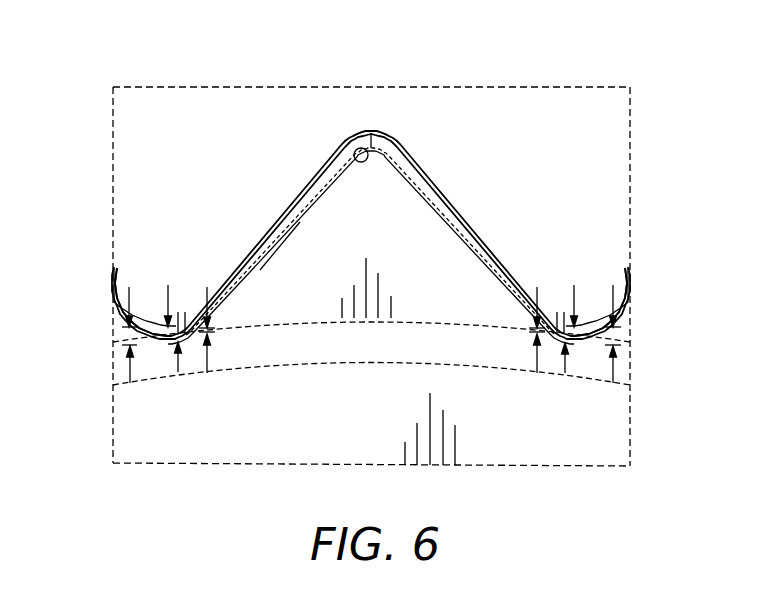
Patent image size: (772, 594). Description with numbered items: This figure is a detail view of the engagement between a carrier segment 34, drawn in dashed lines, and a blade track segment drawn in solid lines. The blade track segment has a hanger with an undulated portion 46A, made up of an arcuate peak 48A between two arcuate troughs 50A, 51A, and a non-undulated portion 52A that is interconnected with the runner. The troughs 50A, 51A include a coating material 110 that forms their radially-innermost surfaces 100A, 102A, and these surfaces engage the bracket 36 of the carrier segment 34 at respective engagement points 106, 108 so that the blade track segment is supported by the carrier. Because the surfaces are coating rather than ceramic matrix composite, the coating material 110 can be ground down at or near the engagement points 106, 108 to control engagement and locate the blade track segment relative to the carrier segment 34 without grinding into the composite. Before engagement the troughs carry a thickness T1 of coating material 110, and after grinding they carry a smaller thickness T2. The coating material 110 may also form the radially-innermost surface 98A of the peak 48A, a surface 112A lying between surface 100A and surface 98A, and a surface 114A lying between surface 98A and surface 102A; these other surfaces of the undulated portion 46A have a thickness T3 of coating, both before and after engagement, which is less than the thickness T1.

The carrier segment 34 is at (508, 166).
The bracket 36 is at (465, 326).
The undulated portion 46A is at (278, 195).
The arcuate peak 48A is at (360, 119).
The arcuate trough 50A is at (182, 318).
The arcuate trough 51A is at (562, 318).
The non-undulated portion 52A is at (624, 457).
The radially-innermost surface 98A is at (355, 152).
The radially-innermost surface 100A is at (170, 305).
The radially-innermost surface 102A is at (572, 305).
The engagement point 106 is at (180, 372).
The engagement point 108 is at (567, 372).
The coating material 110 is at (183, 309).
The surface 112A is at (306, 212).
The surface 114A is at (447, 220).
The thickness T1 is at (128, 380).
The thickness T2 is at (207, 372).
The thickness T3 is at (377, 148).